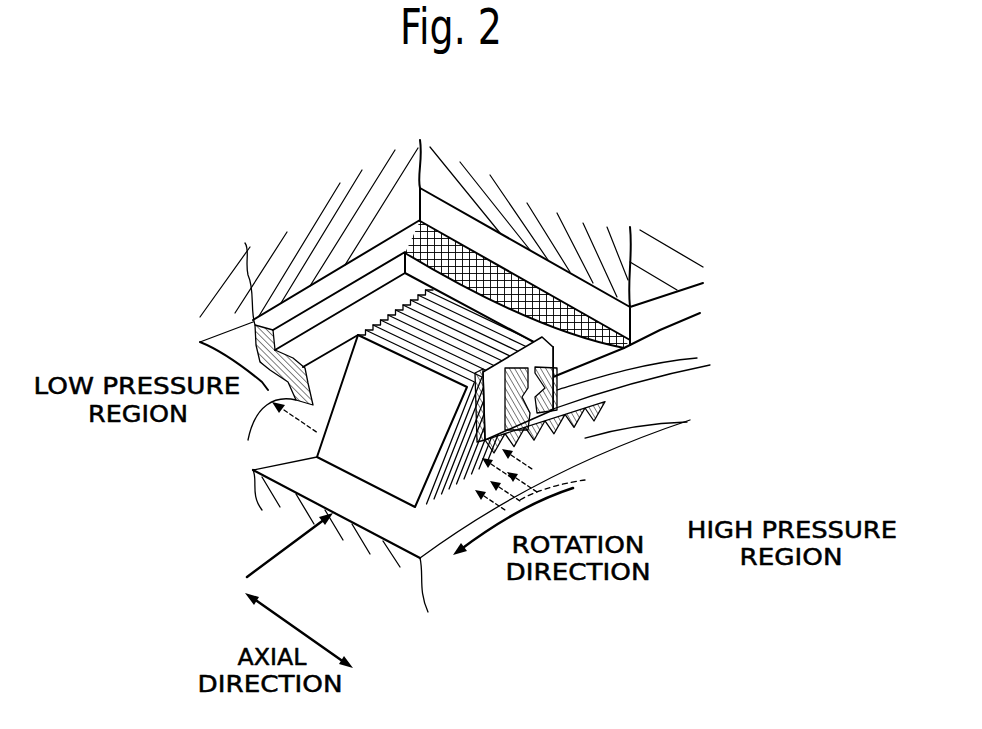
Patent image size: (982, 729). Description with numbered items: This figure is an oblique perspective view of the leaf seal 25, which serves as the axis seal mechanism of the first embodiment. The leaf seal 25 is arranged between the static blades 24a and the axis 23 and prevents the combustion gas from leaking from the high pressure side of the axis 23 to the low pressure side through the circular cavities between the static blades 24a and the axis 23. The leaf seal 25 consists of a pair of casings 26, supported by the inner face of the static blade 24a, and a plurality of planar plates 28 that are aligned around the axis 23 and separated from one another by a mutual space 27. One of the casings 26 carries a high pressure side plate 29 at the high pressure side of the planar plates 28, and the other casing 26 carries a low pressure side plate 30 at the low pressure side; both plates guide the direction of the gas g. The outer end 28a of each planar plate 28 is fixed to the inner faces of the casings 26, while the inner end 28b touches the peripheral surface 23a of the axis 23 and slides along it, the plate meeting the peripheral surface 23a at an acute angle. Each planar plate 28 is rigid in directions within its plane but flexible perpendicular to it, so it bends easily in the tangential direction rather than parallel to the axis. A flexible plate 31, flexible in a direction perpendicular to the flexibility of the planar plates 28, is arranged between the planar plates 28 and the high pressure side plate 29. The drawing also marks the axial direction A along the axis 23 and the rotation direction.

The axis 23 is at (368, 548).
The peripheral surface 23a is at (253, 450).
The static blades 24a is at (525, 228).
The leaf seal 25 is at (343, 243).
The pair of casings 26 is at (627, 362).
The mutual space 27 is at (463, 490).
The planar plates 28 is at (373, 368).
The outer end 28a is at (427, 277).
The inner end 28b is at (363, 473).
The high pressure side plate 29 is at (553, 430).
The low pressure side plate 30 is at (273, 397).
The flexible plate 31 is at (495, 383).
The gas g is at (585, 480).
The axial direction arrow A is at (250, 568).